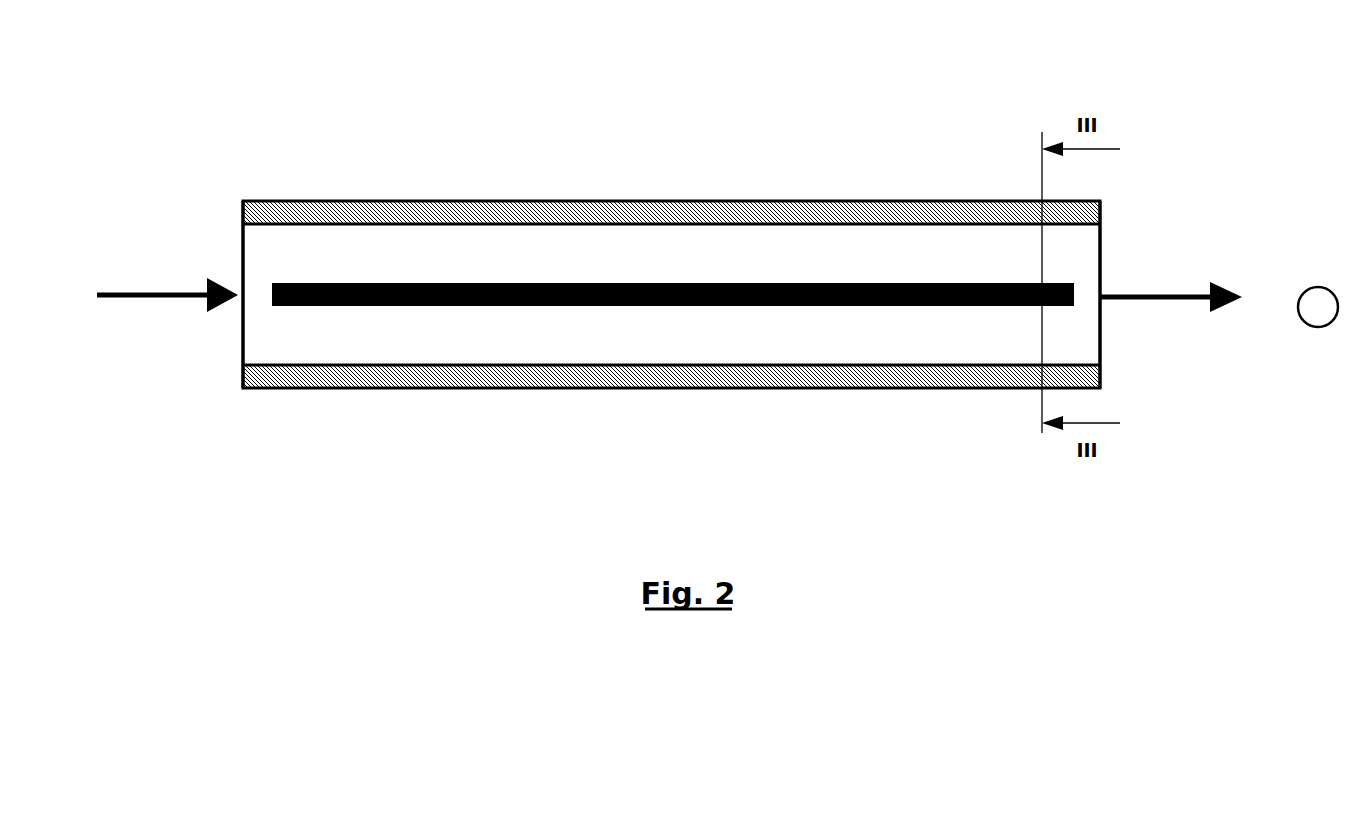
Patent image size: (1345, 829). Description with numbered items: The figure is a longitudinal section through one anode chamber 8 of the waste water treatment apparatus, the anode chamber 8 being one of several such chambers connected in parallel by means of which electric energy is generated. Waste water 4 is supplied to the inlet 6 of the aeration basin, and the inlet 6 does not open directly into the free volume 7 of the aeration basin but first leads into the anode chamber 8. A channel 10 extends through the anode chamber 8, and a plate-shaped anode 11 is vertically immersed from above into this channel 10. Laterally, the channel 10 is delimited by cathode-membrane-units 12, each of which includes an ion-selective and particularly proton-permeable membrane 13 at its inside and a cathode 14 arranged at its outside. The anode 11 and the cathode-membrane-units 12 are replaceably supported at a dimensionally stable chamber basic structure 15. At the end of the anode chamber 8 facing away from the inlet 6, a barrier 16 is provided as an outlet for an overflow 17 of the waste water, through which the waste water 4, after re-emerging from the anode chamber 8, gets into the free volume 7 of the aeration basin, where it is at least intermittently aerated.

The waste water 4 is at (298, 341).
The inlet 6 is at (148, 300).
The free volume 7 is at (1318, 307).
The anode chamber 8 is at (910, 178).
The channel 10 is at (790, 257).
The anode 11 is at (560, 283).
The cathode-membrane-unit 12 is at (510, 220).
The membrane 13 is at (708, 222).
The cathode 14 is at (462, 210).
The chamber basic structure 15 is at (277, 252).
The barrier 16 is at (1100, 332).
The overflow 17 is at (1155, 294).